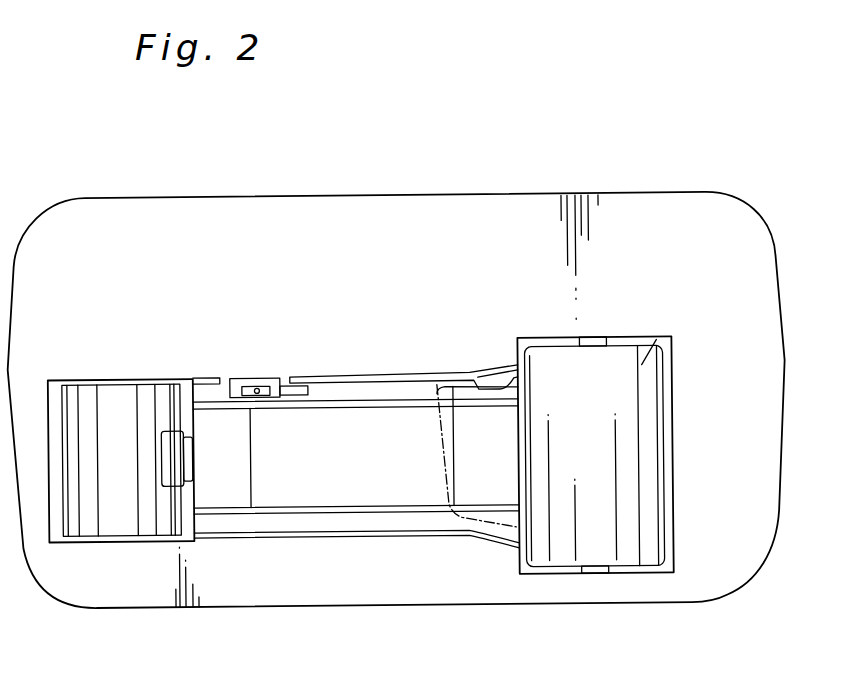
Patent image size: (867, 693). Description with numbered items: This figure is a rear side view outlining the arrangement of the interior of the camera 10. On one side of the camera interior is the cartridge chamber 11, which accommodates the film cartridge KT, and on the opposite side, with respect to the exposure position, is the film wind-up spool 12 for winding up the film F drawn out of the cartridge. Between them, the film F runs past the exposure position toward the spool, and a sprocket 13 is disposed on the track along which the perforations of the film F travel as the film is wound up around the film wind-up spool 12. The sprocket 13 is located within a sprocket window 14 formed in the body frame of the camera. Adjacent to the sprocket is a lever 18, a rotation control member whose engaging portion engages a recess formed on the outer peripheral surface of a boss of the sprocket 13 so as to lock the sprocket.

The camera 10 is at (541, 195).
The cartridge chamber 11 is at (672, 384).
The film wind-up spool 12 is at (100, 404).
The sprocket 13 is at (250, 384).
The sprocket window 14 is at (228, 377).
The lever 18 is at (318, 381).
The film F is at (442, 454).
The film cartridge KT is at (660, 341).